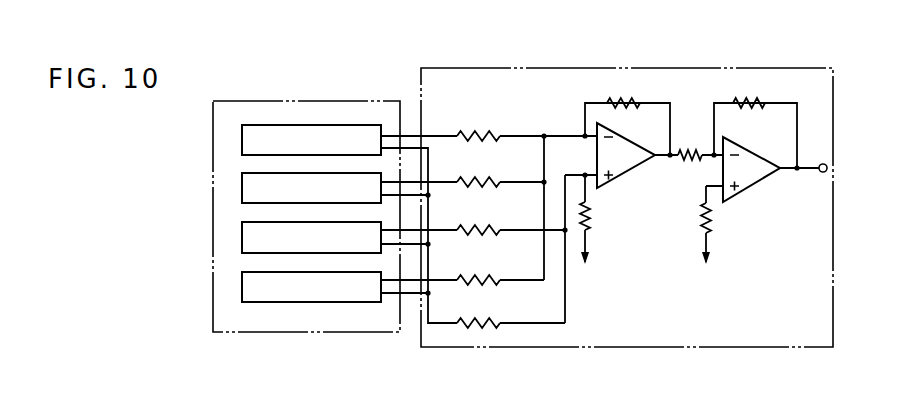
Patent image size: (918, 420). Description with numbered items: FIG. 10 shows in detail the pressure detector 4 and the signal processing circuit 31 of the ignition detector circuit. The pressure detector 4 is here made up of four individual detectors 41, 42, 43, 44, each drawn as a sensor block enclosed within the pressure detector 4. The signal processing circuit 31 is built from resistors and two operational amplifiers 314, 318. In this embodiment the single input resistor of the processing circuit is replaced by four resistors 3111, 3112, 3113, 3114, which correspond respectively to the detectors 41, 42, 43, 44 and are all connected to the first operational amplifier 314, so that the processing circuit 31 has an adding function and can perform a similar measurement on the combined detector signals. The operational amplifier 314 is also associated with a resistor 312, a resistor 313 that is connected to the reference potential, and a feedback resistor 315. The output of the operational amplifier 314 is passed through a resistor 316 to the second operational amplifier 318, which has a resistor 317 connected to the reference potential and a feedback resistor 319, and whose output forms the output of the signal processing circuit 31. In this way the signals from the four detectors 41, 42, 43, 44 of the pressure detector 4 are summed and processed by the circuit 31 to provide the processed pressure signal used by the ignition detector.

The pressure detector 4 is at (330, 101).
The detector 41 is at (242, 136).
The detector 42 is at (242, 186).
The detector 43 is at (242, 234).
The detector 44 is at (242, 285).
The signal processing circuit 31 is at (421, 83).
The resistor 3111 is at (469, 132).
The resistor 3112 is at (469, 178).
The resistor 3113 is at (471, 226).
The resistor 3114 is at (471, 276).
The resistor 312 is at (485, 319).
The resistor 313 is at (590, 210).
The operational amplifier 314 is at (632, 166).
The resistor 315 is at (620, 100).
The resistor 316 is at (690, 150).
The resistor 317 is at (711, 220).
The operational amplifier 318 is at (760, 180).
The resistor 319 is at (745, 86).